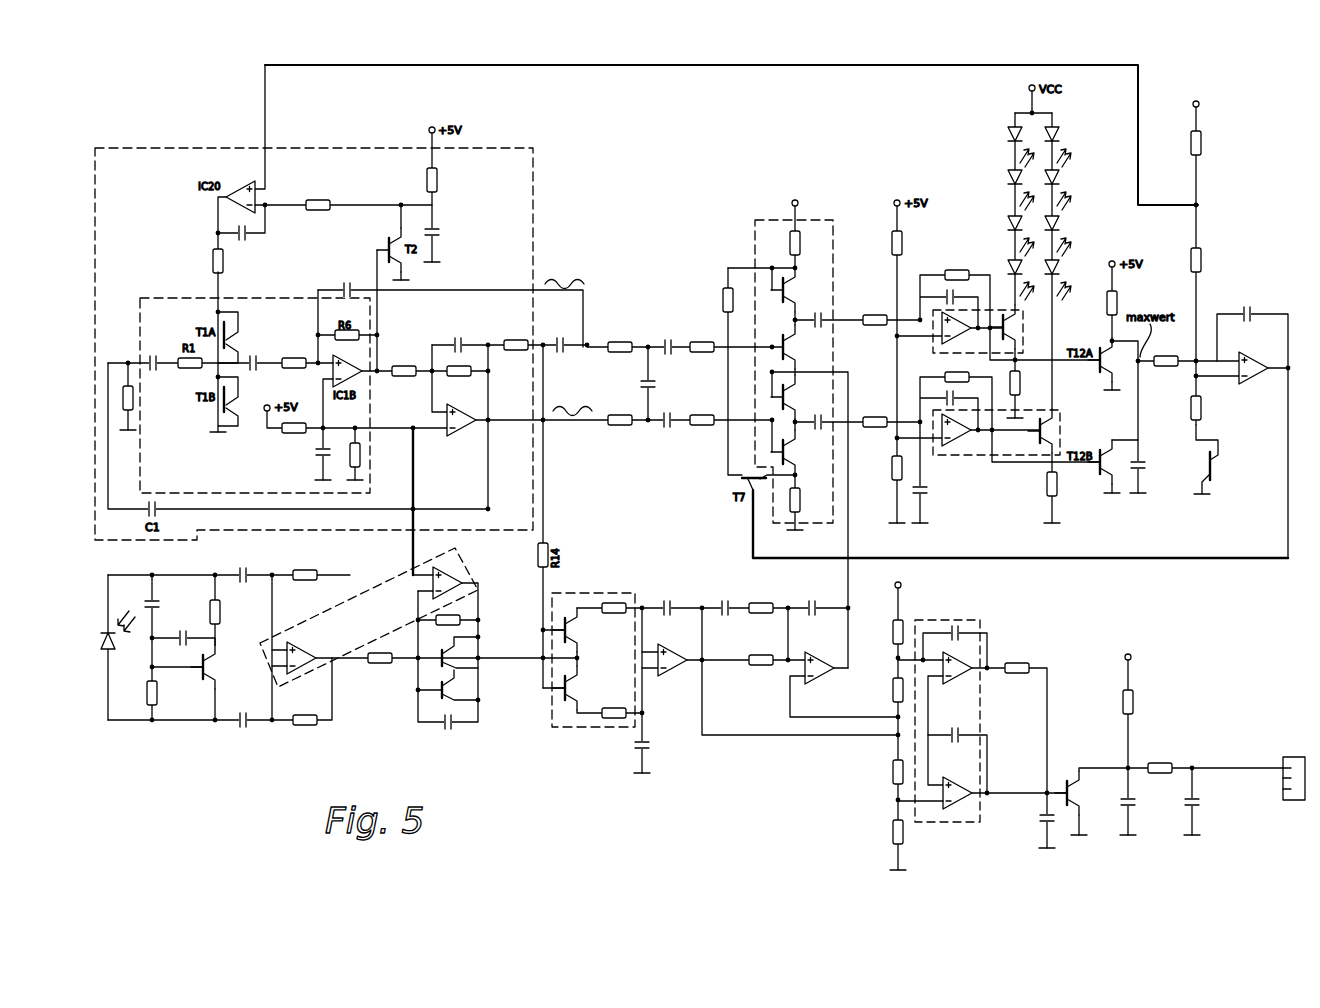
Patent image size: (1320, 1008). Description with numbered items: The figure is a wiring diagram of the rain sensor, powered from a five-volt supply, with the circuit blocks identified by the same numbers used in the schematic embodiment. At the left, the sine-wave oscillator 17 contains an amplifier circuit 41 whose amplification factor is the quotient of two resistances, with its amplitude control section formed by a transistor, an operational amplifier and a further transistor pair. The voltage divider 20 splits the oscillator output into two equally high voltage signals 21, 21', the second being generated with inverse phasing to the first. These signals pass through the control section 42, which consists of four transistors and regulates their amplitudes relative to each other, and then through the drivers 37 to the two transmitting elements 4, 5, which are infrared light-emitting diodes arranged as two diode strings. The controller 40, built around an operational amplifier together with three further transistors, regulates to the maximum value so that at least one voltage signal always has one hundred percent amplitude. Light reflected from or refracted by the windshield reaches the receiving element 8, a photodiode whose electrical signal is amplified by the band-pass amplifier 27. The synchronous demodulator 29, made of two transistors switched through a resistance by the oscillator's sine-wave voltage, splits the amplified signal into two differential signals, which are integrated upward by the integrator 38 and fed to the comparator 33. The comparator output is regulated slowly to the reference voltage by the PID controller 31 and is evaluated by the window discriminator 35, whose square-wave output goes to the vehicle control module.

The transmitting element 4 is at (1006, 178).
The transmitting element 5 is at (1060, 178).
The receiving element 8 is at (110, 656).
The oscillator 17 is at (170, 147).
The voltage divider 20 is at (463, 436).
The voltage signal 21 is at (451, 287).
The voltage signal 21' is at (625, 452).
The amplifier 27 is at (408, 630).
The synchronous demodulator 29 is at (598, 592).
The PID controller 31 is at (833, 677).
The comparator 33 is at (675, 673).
The window discriminator 35 is at (960, 824).
The driver 37 is at (1003, 306).
The integrator 38 is at (670, 603).
The controller 40 is at (1253, 382).
The amplifier circuit 41 is at (169, 297).
The control section 42 is at (770, 216).